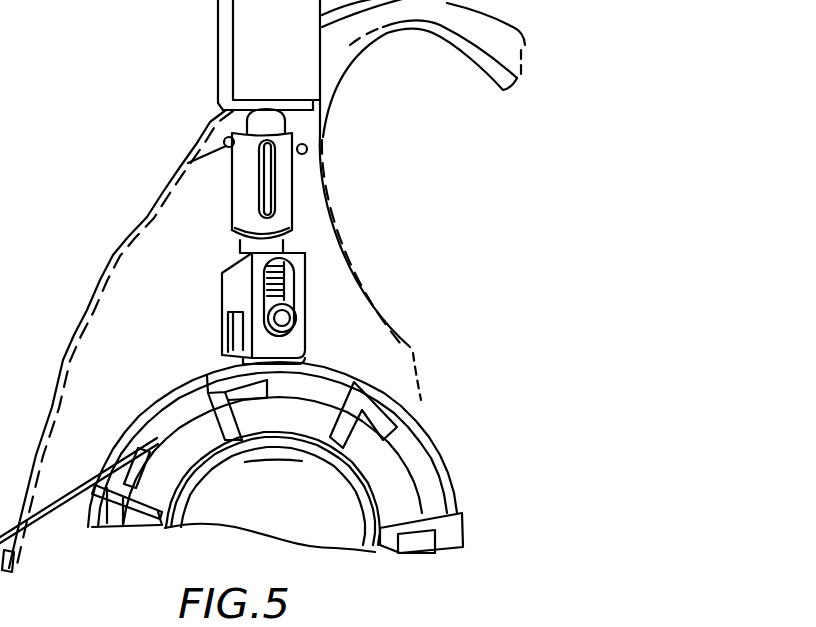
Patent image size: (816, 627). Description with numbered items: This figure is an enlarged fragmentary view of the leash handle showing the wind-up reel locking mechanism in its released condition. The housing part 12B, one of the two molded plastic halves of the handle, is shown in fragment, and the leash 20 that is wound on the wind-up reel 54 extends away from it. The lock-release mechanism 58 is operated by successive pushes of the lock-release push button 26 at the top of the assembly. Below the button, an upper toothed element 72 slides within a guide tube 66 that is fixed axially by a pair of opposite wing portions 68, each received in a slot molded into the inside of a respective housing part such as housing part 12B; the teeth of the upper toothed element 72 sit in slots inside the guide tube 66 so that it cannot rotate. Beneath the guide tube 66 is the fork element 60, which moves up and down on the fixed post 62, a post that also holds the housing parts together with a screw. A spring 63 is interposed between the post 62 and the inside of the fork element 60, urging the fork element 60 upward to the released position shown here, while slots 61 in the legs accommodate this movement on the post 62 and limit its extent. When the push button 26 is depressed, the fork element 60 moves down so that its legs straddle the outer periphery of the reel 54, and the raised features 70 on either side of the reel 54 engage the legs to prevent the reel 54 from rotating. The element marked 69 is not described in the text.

The housing part 12B is at (137, 284).
The leash 20 is at (50, 503).
The lock-release push button 26 is at (224, 42).
The wind-up reel 54 is at (463, 489).
The lock-release mechanism 58 is at (302, 238).
The fork element 60 is at (304, 335).
The slot 61 is at (300, 270).
The fixed post 62 is at (297, 306).
The spring 63 is at (226, 270).
The guide tube 66 is at (232, 180).
The wing portion 68 is at (276, 186).
The notch 69 is at (226, 340).
The raised feature 70 is at (207, 388).
The upper toothed element 72 is at (300, 125).